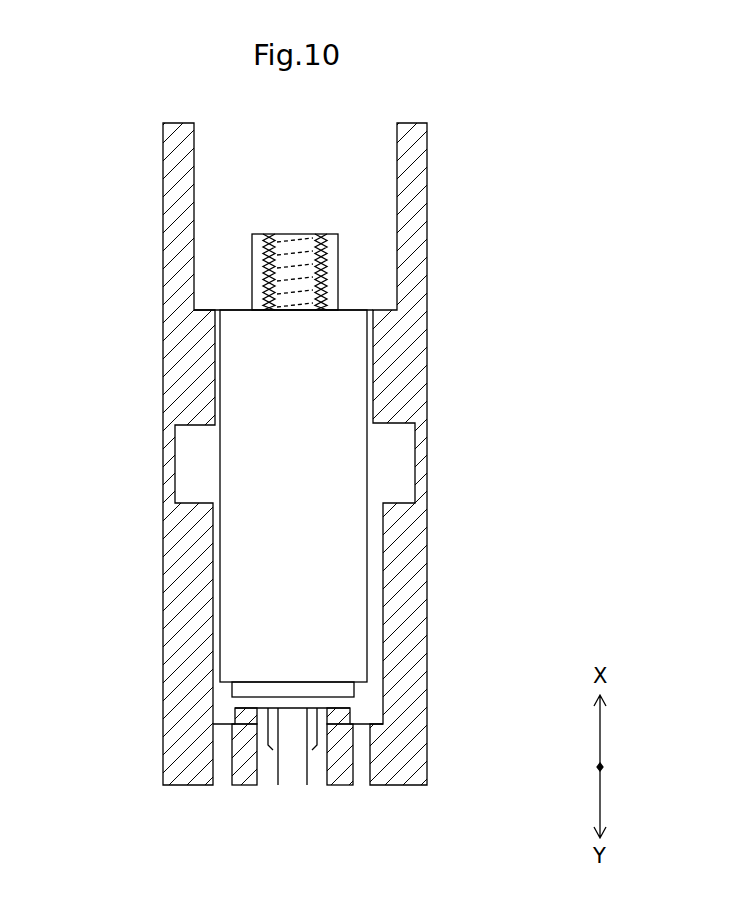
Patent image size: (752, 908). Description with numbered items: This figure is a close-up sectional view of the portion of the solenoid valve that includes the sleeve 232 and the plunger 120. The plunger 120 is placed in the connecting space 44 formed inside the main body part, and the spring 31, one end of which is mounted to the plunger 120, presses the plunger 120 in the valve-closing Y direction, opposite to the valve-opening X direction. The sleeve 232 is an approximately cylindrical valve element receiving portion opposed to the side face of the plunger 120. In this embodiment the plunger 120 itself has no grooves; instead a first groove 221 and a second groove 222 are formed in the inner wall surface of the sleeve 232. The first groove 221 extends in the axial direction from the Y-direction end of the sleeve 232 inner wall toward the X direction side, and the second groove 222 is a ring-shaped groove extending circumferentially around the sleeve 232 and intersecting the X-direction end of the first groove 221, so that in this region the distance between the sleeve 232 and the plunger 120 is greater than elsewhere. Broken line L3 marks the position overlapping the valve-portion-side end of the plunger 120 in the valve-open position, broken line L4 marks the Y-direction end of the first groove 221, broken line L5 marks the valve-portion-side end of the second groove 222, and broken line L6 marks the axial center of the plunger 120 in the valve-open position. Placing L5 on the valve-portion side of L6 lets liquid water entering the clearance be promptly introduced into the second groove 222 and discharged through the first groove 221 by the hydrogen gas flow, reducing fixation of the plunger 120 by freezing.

The spring 31 is at (322, 262).
The plunger 120 is at (332, 376).
The sleeve 232 is at (167, 457).
The second groove 222 is at (395, 463).
The connecting space 44 is at (370, 558).
The first groove 221 is at (372, 618).
The broken line L6 is at (220, 495).
The broken line L5 is at (220, 503).
The broken line L3 is at (220, 683).
The broken line L4 is at (213, 725).